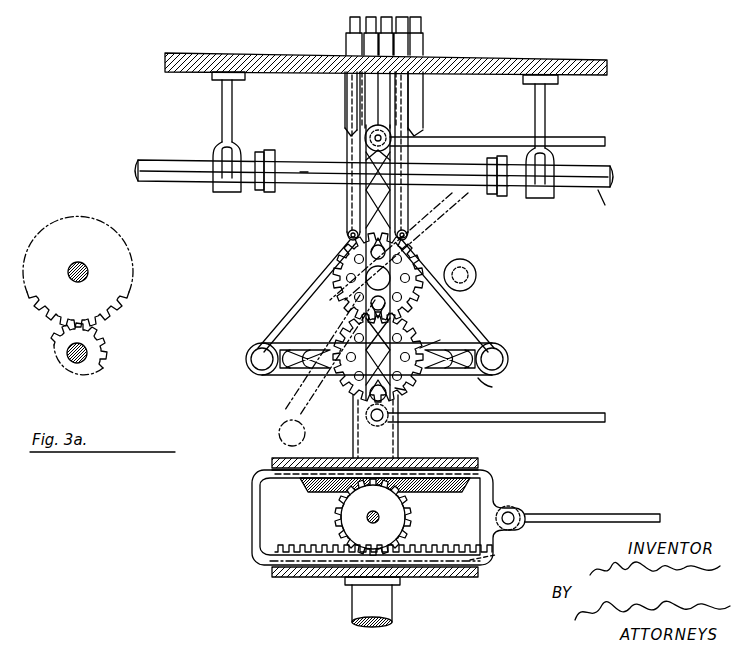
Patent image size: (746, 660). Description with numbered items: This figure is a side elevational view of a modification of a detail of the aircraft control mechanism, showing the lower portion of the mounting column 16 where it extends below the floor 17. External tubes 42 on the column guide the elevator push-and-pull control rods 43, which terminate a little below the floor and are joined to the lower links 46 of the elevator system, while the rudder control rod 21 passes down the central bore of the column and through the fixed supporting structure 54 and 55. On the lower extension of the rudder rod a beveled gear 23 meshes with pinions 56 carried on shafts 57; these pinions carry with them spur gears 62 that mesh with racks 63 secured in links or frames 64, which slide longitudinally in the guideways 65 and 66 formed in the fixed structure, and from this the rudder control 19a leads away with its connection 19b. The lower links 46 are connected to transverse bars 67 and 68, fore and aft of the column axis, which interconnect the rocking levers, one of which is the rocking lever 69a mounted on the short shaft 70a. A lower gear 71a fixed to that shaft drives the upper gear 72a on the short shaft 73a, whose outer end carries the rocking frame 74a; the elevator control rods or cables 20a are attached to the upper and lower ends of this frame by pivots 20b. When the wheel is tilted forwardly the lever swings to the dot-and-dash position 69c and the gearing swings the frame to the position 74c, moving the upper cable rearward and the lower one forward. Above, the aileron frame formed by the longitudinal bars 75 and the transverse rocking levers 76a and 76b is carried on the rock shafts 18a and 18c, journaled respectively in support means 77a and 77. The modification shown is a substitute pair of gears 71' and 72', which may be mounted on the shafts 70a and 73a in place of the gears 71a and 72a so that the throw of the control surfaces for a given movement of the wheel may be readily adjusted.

The mounting column 16 is at (420, 46).
The floor 17 is at (483, 57).
The rock shaft 18a is at (190, 186).
The rock shaft 18c is at (605, 205).
The rudder control 19a is at (590, 514).
The rod eye 19b is at (512, 512).
The elevator control rods or cables 20a is at (575, 140).
The pivots 20b is at (390, 134).
The rudder control rod 21 is at (385, 606).
The beveled gear 23 is at (448, 482).
The tubes 42 is at (350, 100).
The elevator control rods 43 is at (352, 147).
The lower links 46 is at (385, 97).
The fixed supporting structure 54 is at (455, 458).
The fixed supporting structure 55 is at (478, 578).
The pinions 56 is at (408, 502).
The shafts 57 is at (367, 517).
The spur gears 62 is at (412, 523).
The racks 63 is at (453, 545).
The links or frames 64 is at (252, 518).
The guideway 65 is at (483, 470).
The guideway 66 is at (495, 555).
The transverse bar 67 is at (258, 360).
The transverse bar 68 is at (498, 358).
The rocking lever 69a is at (497, 387).
The lever position 69c is at (478, 270).
The short shaft 70a is at (405, 390).
The lower gear 71a is at (440, 340).
The upper gear 72a is at (438, 310).
The short shaft 73a is at (374, 275).
The rocking frame 74a is at (365, 205).
The rocking frame position 74c is at (460, 218).
The longitudinal bars 75 is at (310, 150).
The transverse rocking lever 76a is at (270, 150).
The transverse rocking lever 76b is at (497, 157).
The support means 77 is at (542, 112).
The support means 77a is at (227, 97).
The substitute gear 72' is at (98, 271).
The substitute gear 71' is at (97, 349).